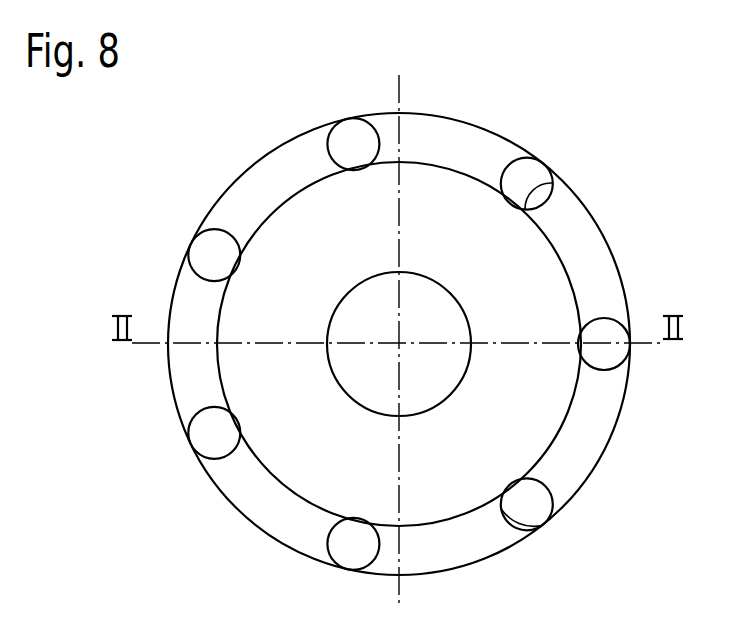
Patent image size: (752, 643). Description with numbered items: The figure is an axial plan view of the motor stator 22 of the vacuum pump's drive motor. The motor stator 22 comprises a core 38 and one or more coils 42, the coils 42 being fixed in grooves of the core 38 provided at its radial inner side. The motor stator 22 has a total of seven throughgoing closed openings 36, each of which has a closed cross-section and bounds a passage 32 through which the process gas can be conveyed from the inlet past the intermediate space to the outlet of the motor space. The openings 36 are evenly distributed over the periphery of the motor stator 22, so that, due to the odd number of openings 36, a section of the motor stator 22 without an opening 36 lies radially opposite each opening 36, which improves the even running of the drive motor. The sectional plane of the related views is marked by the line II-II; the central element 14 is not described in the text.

The shaft 14 is at (400, 346).
The motor stator 22 is at (403, 319).
The passage 32 is at (421, 352).
The opening 36 is at (557, 182).
The core 38 is at (235, 210).
The coil 42 is at (298, 223).